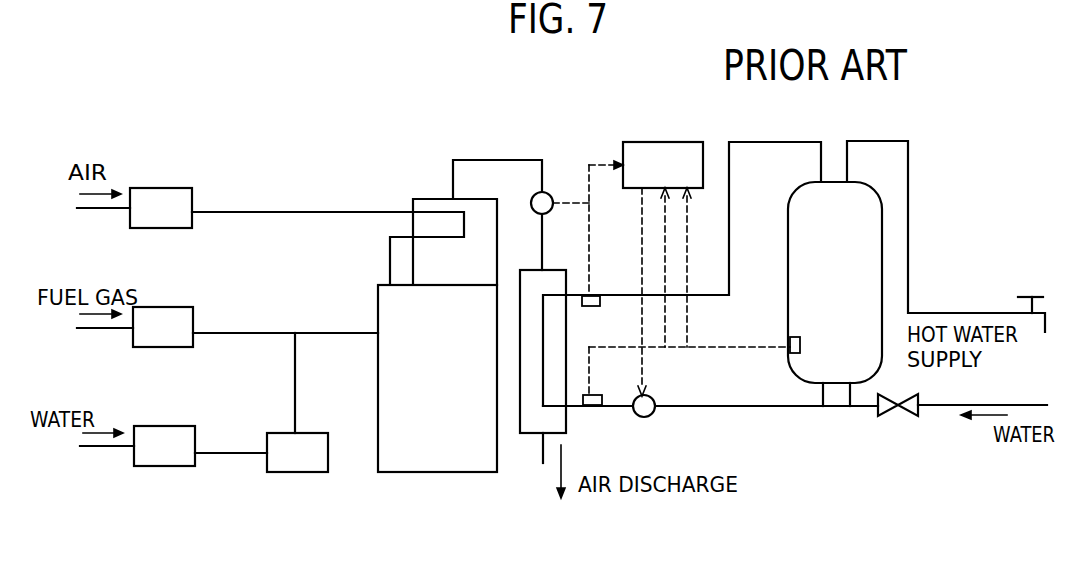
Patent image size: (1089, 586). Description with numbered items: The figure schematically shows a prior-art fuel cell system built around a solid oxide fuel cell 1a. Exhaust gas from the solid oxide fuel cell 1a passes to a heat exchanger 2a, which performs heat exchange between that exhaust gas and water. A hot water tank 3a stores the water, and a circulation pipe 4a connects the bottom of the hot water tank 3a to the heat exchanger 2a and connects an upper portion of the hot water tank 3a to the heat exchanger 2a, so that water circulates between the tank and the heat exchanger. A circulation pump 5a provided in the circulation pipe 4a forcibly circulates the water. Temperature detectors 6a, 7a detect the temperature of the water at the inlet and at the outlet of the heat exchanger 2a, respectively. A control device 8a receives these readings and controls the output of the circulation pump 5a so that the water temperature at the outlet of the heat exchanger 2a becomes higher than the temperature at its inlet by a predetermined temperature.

The solid oxide fuel cell 1a is at (438, 472).
The heat exchanger 2a is at (557, 269).
The hot water tank 3a is at (794, 193).
The circulation pipe 4a is at (738, 405).
The circulation pump 5a is at (647, 417).
The temperature detector 6a is at (597, 395).
The temperature detector 7a is at (594, 306).
The control device 8a is at (685, 142).